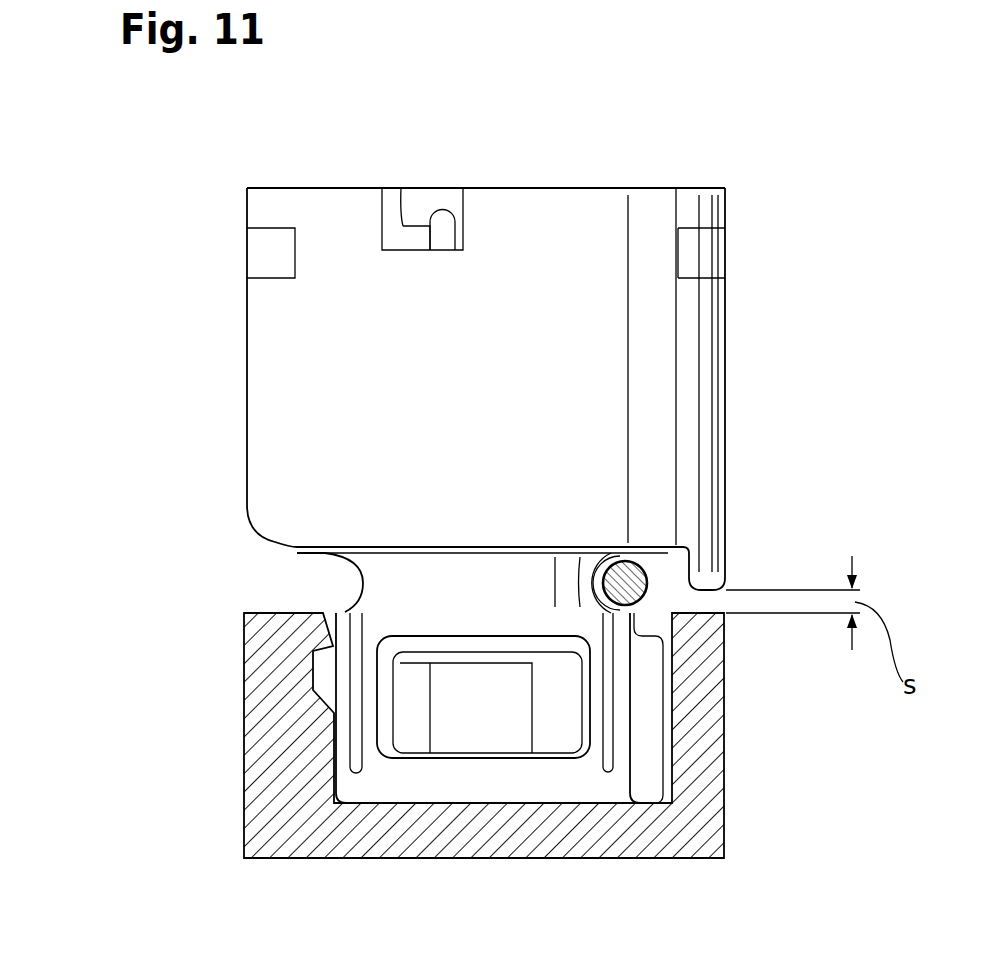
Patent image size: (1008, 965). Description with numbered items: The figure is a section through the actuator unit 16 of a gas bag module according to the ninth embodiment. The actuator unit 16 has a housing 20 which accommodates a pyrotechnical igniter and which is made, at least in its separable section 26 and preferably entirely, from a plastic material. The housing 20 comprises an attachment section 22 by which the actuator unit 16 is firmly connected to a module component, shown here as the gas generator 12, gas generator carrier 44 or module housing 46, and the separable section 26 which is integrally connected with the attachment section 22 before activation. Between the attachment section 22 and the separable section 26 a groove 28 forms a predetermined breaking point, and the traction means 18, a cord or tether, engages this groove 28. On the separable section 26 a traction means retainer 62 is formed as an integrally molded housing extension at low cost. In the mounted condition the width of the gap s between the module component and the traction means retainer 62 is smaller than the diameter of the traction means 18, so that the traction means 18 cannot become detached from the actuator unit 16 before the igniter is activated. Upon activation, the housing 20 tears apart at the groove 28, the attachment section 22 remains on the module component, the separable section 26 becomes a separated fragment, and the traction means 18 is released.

The actuator unit 16 is at (600, 157).
The separable section 26 is at (300, 412).
The groove 28 is at (350, 587).
The housing 20 is at (729, 357).
The traction means retainer 62 is at (708, 569).
The traction means 18 is at (640, 560).
The gas generator 12 is at (377, 735).
The gas generator carrier 44 is at (377, 735).
The module housing 46 is at (287, 755).
The attachment section 22 is at (481, 735).